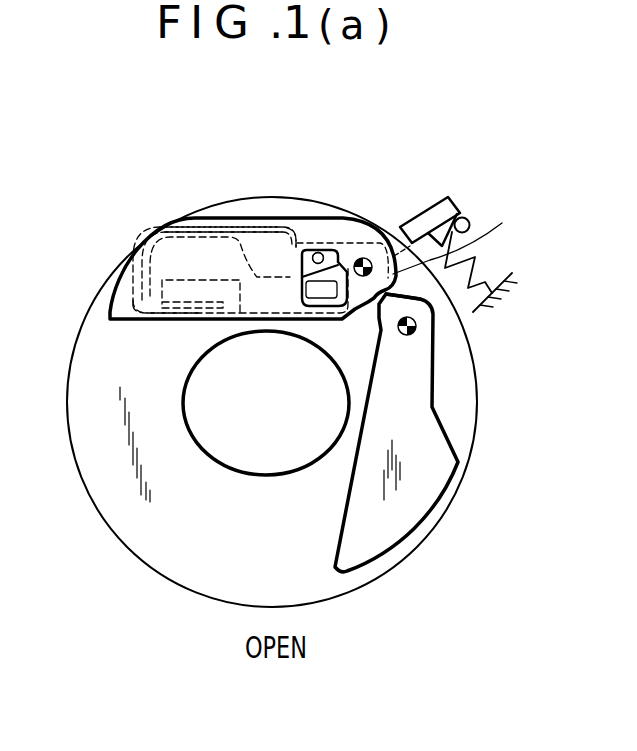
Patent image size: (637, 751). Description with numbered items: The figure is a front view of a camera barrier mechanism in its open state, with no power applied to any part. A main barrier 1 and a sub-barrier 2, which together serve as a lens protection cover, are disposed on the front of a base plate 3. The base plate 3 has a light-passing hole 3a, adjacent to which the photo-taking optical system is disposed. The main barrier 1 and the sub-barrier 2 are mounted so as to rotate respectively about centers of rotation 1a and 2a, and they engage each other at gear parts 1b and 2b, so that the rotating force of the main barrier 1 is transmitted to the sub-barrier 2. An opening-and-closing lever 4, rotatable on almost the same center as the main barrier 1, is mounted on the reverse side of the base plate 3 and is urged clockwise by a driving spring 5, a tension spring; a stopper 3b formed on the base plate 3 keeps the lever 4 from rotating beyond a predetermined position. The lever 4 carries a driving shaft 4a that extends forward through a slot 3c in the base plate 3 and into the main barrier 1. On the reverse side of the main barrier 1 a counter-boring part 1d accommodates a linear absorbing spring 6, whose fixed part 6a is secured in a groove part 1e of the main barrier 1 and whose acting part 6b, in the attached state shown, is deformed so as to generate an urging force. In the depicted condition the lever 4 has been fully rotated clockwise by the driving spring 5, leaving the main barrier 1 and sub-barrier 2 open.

The main barrier 1 is at (337, 230).
The center of rotation 1a is at (358, 257).
The gear part 1b is at (463, 239).
The counter-boring part 1d is at (167, 263).
The groove part 1e is at (180, 318).
The sub-barrier 2 is at (422, 498).
The center of rotation 2a is at (417, 329).
The gear part 2b is at (427, 313).
The base plate 3 is at (100, 460).
The light-passing hole 3a is at (203, 437).
The stopper 3b is at (465, 217).
The slot 3c is at (300, 286).
The opening-and-closing lever 4 is at (410, 218).
The driving shaft 4a is at (318, 252).
The driving spring 5 is at (478, 259).
The absorbing spring 6 is at (186, 232).
The fixed part 6a is at (198, 320).
The acting part 6b is at (298, 245).